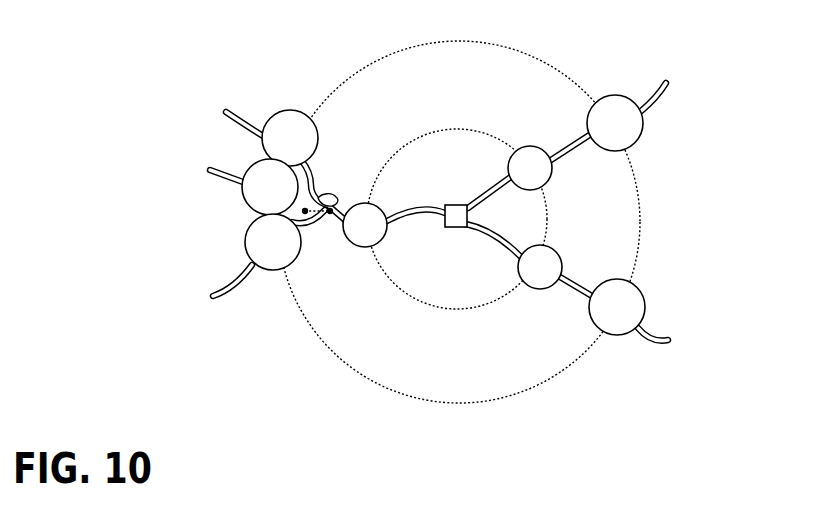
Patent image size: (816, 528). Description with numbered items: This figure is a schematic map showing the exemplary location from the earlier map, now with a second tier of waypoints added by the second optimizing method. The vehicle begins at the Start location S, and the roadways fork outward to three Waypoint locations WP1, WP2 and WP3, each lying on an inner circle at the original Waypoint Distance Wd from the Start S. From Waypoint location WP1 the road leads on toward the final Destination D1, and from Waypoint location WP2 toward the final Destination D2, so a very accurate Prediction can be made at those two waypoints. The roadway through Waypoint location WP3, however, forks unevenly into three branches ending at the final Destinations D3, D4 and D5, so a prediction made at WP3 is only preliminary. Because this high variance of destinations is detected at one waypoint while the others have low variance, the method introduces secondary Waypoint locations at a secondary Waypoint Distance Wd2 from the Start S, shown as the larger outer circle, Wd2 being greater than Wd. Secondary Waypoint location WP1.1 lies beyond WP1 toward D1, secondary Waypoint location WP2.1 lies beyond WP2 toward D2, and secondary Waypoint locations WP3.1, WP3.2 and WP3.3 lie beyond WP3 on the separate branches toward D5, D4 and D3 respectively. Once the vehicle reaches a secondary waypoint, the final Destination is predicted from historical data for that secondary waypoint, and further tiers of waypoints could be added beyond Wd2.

The Start location S is at (452, 206).
The Waypoint location WP1 is at (530, 168).
The Waypoint location WP2 is at (540, 267).
The Waypoint location WP3 is at (365, 225).
The secondary Waypoint location WP1.1 is at (615, 123).
The secondary Waypoint location WP2.1 is at (617, 307).
The secondary Waypoint location WP3.1 is at (290, 138).
The secondary Waypoint location WP3.2 is at (270, 187).
The secondary Waypoint location WP3.3 is at (273, 242).
The final Destination D1 is at (627, 93).
The final Destination D2 is at (618, 347).
The final Destination D3 is at (258, 295).
The final Destination D4 is at (237, 197).
The final Destination D5 is at (258, 122).
The Waypoint Distance Wd is at (447, 230).
The secondary Waypoint Distance Wd2 is at (370, 378).